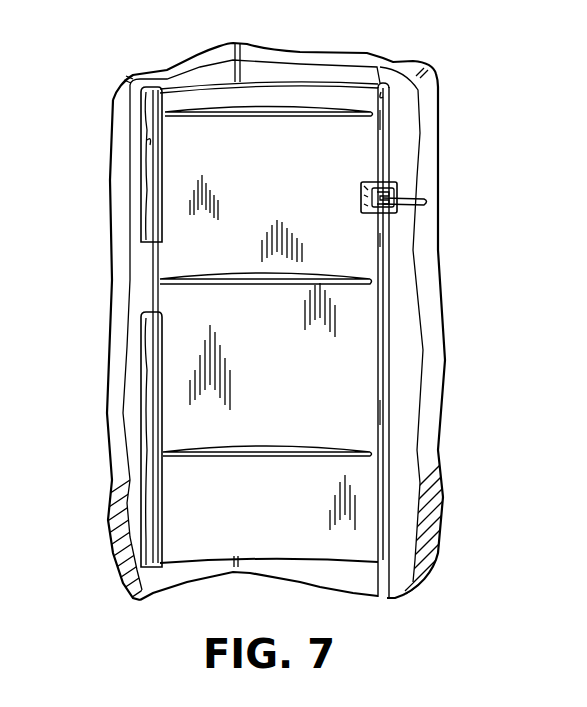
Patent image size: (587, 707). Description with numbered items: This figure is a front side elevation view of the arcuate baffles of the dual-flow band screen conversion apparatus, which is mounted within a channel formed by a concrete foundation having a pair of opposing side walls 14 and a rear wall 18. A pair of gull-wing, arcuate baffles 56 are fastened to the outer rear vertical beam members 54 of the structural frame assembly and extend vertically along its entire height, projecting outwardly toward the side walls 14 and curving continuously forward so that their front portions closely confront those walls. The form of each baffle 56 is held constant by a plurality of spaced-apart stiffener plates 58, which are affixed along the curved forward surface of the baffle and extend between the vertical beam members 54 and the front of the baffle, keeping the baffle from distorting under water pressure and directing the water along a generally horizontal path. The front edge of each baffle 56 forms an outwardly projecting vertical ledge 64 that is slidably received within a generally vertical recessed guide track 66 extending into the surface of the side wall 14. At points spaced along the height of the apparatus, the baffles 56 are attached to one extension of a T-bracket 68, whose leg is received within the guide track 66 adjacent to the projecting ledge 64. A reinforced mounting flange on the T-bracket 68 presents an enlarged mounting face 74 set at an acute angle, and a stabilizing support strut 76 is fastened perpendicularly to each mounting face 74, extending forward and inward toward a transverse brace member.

The side walls 14 is at (372, 51).
The rear wall 18 is at (158, 67).
The vertical beam members 54 is at (147, 140).
The arcuate baffles 56 is at (280, 399).
The stiffener plates 58 is at (247, 117).
The projecting ledge 64 is at (383, 97).
The recessed guide track 66 is at (385, 60).
The T-bracket 68 is at (370, 182).
The mounting face 74 is at (375, 213).
The support strut 76 is at (415, 194).